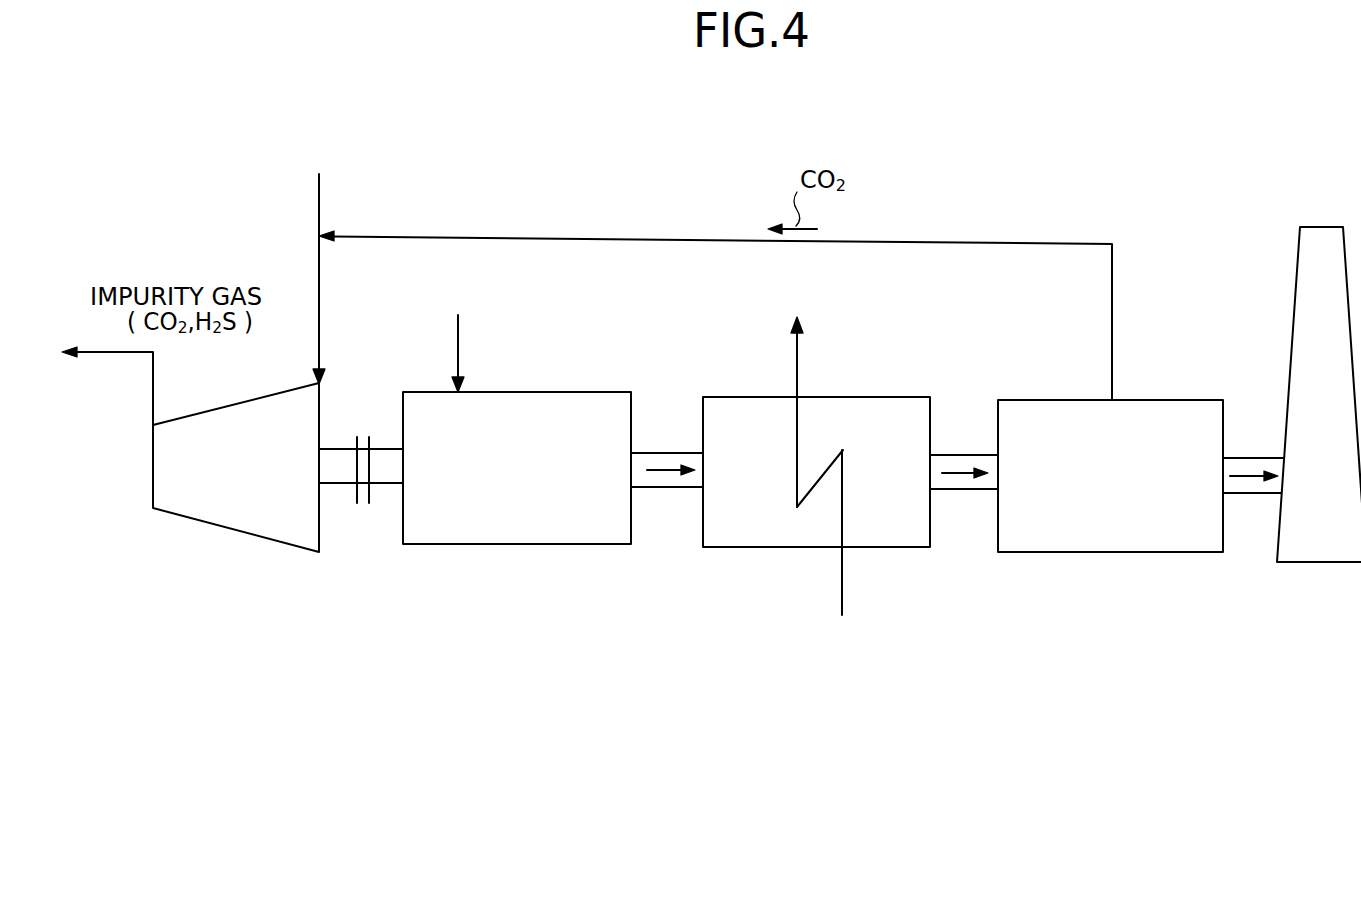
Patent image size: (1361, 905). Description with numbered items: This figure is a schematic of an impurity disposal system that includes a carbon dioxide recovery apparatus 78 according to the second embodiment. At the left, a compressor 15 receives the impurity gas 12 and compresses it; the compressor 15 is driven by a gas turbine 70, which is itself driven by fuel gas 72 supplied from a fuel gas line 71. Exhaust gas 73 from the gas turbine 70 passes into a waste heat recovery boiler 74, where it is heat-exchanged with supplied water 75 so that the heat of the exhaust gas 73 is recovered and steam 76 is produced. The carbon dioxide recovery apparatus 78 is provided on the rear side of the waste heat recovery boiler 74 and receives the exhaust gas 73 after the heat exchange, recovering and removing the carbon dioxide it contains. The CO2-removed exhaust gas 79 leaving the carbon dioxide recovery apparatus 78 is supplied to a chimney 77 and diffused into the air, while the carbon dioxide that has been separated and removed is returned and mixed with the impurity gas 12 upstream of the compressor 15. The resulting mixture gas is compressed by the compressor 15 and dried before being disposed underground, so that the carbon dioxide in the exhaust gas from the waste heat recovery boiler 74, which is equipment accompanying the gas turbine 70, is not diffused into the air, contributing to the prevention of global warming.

The impurity gas 12 is at (317, 272).
The compressor 15 is at (250, 537).
The gas turbine 70 is at (575, 392).
The fuel gas line 71 is at (455, 352).
The fuel gas 72 is at (456, 297).
The exhaust gas 73 is at (665, 470).
The waste heat recovery boiler 74 is at (890, 548).
The water 75 is at (839, 548).
The steam 76 is at (796, 396).
The chimney 77 is at (1322, 227).
The carbon dioxide recovery apparatus 78 is at (1181, 400).
The CO2-removed exhaust gas 79 is at (1244, 476).